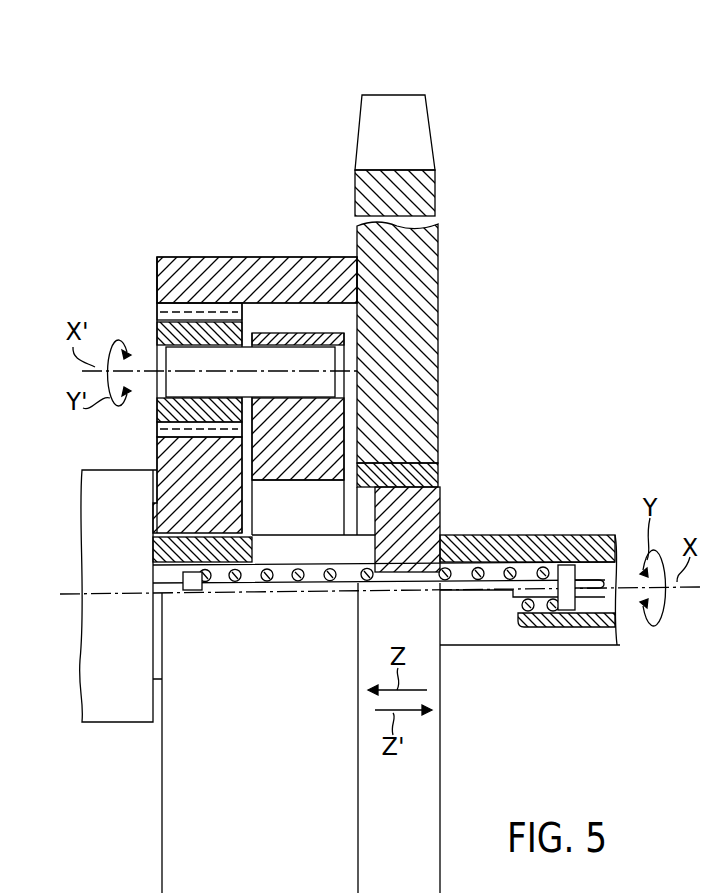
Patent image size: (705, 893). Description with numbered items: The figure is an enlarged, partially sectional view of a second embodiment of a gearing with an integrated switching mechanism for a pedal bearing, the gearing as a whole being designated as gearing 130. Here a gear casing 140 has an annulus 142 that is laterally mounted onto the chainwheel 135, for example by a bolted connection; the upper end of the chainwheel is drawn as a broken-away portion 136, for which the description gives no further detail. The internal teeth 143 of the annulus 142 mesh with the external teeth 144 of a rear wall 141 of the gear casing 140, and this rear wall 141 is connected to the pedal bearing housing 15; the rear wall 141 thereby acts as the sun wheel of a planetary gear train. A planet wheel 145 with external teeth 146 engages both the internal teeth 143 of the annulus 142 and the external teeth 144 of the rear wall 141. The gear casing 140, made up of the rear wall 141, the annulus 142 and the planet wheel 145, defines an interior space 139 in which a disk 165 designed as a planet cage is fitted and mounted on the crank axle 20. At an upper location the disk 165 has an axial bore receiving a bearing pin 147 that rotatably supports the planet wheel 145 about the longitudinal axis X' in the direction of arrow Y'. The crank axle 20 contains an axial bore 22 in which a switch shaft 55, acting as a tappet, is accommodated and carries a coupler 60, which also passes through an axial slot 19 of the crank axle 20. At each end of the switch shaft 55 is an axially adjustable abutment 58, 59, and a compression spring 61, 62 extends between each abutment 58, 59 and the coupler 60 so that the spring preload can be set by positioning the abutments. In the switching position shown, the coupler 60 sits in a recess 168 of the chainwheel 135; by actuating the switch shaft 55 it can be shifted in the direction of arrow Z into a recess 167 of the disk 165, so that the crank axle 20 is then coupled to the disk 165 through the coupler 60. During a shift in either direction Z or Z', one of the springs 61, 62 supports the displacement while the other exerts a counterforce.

The pedal bearing housing 15 is at (108, 722).
The axial slot 19 is at (318, 560).
The crank axle 20 is at (560, 529).
The axial bore 22 is at (603, 560).
The switch shaft 55 is at (600, 628).
The abutment 58 is at (563, 612).
The abutment 59 is at (192, 592).
The coupler 60 is at (423, 502).
The compression spring 61 is at (517, 600).
The compression spring 62 is at (262, 580).
The gearing 130 is at (82, 281).
The chainwheel 135 is at (425, 247).
The hub end 136 is at (415, 138).
The interior space 139 is at (333, 313).
The gear casing 140 is at (258, 249).
The rear wall 141 is at (170, 478).
The annulus 142 is at (323, 265).
The internal teeth 143 is at (193, 308).
The external teeth 144 is at (158, 428).
The planet wheel 145 is at (155, 337).
The external teeth 146 is at (199, 410).
The bearing pin 147 is at (318, 356).
The disk 165 is at (323, 430).
The recess 167 is at (280, 515).
The recess 168 is at (370, 480).